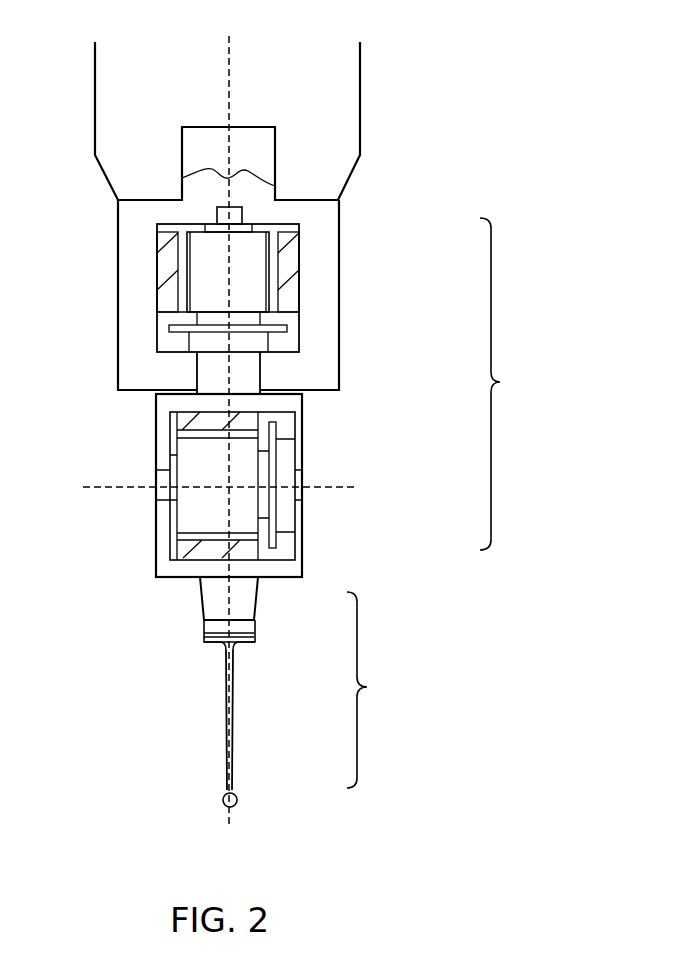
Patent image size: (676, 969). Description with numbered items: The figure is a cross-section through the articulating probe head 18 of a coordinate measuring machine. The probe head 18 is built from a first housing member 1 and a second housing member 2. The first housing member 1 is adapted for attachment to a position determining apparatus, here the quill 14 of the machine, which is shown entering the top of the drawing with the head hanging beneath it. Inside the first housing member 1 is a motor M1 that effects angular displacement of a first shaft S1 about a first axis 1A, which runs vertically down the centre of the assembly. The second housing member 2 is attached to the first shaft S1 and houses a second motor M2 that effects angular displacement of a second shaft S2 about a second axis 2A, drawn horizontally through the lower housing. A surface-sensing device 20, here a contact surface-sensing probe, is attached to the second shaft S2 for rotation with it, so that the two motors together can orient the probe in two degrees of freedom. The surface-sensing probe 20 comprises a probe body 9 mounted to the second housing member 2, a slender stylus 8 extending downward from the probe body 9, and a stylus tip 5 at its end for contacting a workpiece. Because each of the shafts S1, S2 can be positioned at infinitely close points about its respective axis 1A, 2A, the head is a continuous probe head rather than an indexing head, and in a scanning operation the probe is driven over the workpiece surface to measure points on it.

The first housing member 1 is at (127, 233).
The second housing member 2 is at (160, 419).
The stylus tip 5 is at (222, 800).
The stylus 8 is at (226, 712).
The probe body 9 is at (204, 628).
The quill 14 is at (112, 93).
The articulating probe head 18 is at (500, 382).
The surface-sensing device 20 is at (367, 687).
The motor M1 is at (197, 262).
The motor M2 is at (195, 508).
The first shaft S1 is at (207, 373).
The second shaft S2 is at (160, 478).
The first axis 1A is at (233, 419).
The second axis 2A is at (238, 488).